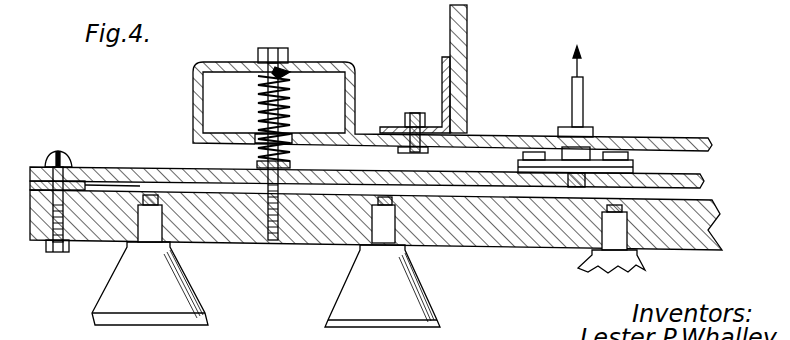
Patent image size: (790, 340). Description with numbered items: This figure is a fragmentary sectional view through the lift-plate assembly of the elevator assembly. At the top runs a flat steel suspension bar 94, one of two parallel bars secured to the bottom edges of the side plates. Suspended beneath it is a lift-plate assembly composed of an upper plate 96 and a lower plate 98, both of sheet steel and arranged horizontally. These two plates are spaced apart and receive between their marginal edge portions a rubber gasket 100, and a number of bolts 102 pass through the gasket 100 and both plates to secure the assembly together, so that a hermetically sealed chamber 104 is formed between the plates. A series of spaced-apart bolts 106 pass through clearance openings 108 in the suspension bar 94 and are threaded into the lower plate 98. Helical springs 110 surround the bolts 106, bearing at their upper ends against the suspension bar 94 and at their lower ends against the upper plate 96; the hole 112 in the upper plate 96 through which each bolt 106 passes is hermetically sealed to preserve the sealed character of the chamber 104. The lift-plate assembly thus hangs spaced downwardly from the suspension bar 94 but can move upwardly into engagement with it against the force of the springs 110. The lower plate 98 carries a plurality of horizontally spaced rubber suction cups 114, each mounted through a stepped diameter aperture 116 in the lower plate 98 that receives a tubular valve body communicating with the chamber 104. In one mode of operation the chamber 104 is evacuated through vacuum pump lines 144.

The suspension bar 94 is at (193, 82).
The upper plate 96 is at (98, 166).
The lower plate 98 is at (92, 232).
The gasket 100 is at (42, 162).
The bolt 102 is at (56, 242).
The hermetically sealed chamber 104 is at (137, 190).
The bolt 106 is at (272, 48).
The clearance opening 108 is at (286, 72).
The helical spring 110 is at (292, 108).
The hole 112 is at (290, 168).
The rubber suction cup 114 is at (318, 292).
The stepped diameter aperture 116 is at (400, 225).
The line 144 is at (583, 122).